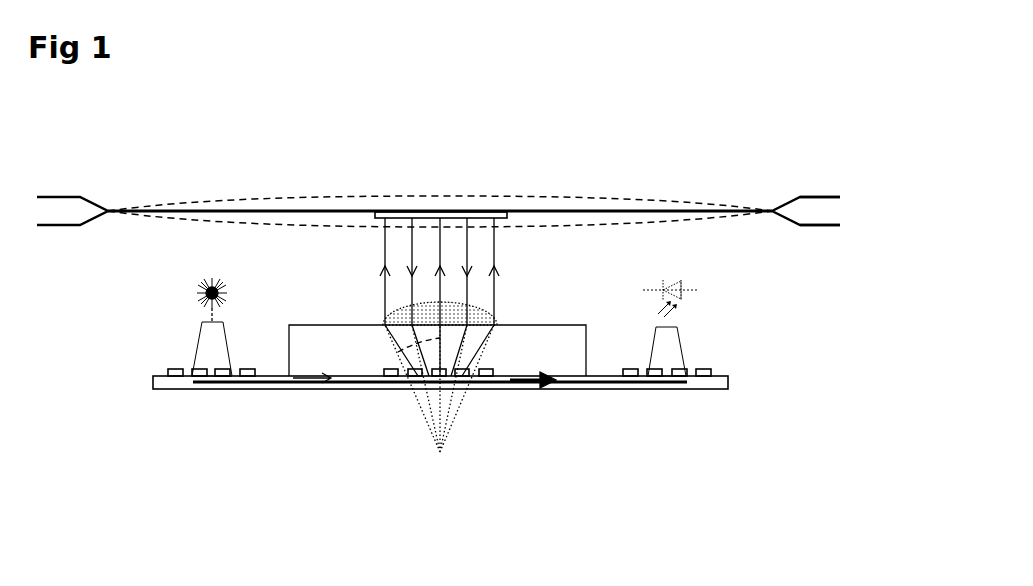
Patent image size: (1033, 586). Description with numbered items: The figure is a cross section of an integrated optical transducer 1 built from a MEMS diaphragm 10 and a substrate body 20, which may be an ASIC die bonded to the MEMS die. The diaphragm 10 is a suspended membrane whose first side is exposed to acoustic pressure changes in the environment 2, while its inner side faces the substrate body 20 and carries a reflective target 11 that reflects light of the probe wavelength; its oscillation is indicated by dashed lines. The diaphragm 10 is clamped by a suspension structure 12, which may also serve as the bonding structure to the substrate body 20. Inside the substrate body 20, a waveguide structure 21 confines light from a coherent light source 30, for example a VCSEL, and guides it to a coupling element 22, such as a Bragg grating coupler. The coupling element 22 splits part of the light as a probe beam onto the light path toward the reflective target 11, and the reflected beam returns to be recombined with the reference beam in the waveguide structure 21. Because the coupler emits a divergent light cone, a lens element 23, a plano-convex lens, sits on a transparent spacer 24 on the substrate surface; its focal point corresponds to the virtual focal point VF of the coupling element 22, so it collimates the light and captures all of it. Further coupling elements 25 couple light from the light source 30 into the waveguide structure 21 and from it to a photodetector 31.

The integrated optical transducer 1 is at (100, 162).
The environment 2 is at (365, 164).
The MEMS diaphragm 10 is at (602, 210).
The reflective target 11 is at (483, 211).
The suspension structure 12 is at (805, 198).
The substrate body 20 is at (142, 365).
The waveguide structure 21 is at (729, 381).
The coupling element 22 is at (497, 390).
The lens element 23 is at (480, 320).
The spacer 24 is at (557, 340).
The further coupling elements 25 is at (250, 382).
The coherent light source 30 is at (235, 296).
The photodetector 31 is at (712, 292).
The virtual focal point VF is at (444, 455).